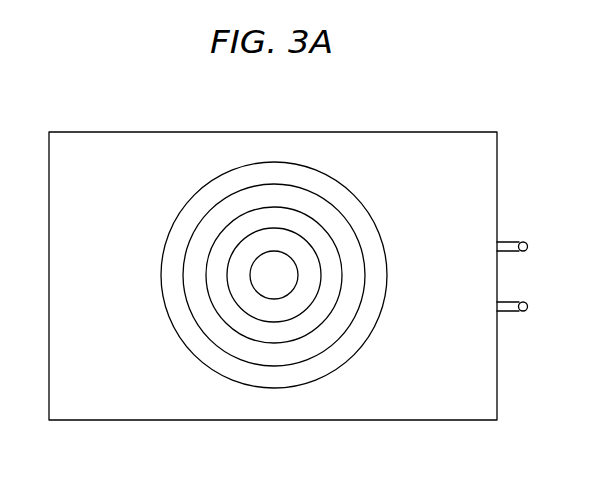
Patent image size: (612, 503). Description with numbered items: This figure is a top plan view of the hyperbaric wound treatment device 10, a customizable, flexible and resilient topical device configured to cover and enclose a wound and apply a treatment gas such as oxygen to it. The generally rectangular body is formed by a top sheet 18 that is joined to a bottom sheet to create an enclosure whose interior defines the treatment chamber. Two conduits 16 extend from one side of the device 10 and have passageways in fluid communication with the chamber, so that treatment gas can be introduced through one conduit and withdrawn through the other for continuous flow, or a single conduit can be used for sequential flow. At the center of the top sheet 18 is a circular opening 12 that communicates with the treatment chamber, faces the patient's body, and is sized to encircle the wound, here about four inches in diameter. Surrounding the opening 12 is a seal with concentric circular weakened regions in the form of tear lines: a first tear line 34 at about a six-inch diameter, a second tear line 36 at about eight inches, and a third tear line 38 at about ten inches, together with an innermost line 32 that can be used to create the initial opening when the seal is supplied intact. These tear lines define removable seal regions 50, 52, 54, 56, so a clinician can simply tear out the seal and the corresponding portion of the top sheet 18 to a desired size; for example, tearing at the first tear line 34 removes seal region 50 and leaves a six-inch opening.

The hyperbaric wound treatment device 10 is at (314, 262).
The opening 12 is at (275, 268).
The conduits 16 is at (186, 177).
The top sheet 18 is at (473, 413).
The first tear line 32 is at (293, 258).
The first tear line 34 is at (323, 283).
The second tear line 36 is at (338, 303).
The third tear line 38 is at (327, 348).
The seal region 50 is at (263, 303).
The seal region 52 is at (228, 307).
The seal region 54 is at (191, 290).
The seal region 56 is at (162, 280).